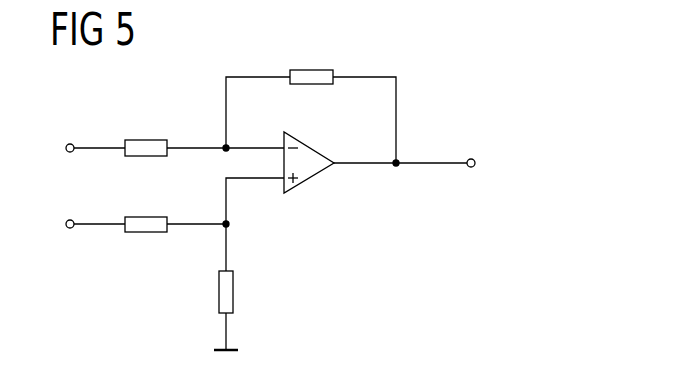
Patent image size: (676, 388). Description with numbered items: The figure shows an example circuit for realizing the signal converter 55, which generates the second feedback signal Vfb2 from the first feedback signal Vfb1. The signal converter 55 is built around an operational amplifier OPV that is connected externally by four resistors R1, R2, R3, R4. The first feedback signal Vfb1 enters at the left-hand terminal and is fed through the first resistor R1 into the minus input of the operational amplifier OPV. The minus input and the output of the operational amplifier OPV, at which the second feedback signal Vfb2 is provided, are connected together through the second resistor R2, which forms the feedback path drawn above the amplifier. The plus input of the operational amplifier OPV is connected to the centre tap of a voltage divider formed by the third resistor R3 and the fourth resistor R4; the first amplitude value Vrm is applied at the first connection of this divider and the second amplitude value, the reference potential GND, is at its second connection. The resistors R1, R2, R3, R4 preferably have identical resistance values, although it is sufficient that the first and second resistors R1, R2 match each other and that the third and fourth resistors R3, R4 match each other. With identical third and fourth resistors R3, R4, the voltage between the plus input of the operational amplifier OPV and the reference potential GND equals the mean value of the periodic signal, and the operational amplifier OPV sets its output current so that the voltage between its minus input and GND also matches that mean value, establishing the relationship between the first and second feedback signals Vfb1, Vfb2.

The signal converter 55 is at (455, 80).
The first resistor R1 is at (146, 139).
The second resistor R2 is at (313, 69).
The third resistor R3 is at (146, 233).
The fourth resistor R4 is at (234, 292).
The operational amplifier OPV is at (311, 180).
The first feedback signal Vfb1 is at (87, 136).
The second feedback signal Vfb2 is at (446, 148).
The first amplitude value Vrm is at (88, 212).
The reference potential GND is at (227, 349).